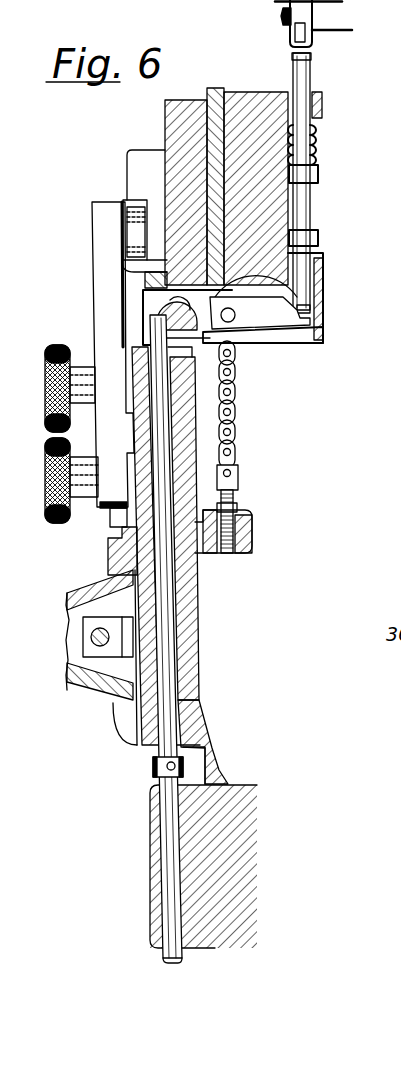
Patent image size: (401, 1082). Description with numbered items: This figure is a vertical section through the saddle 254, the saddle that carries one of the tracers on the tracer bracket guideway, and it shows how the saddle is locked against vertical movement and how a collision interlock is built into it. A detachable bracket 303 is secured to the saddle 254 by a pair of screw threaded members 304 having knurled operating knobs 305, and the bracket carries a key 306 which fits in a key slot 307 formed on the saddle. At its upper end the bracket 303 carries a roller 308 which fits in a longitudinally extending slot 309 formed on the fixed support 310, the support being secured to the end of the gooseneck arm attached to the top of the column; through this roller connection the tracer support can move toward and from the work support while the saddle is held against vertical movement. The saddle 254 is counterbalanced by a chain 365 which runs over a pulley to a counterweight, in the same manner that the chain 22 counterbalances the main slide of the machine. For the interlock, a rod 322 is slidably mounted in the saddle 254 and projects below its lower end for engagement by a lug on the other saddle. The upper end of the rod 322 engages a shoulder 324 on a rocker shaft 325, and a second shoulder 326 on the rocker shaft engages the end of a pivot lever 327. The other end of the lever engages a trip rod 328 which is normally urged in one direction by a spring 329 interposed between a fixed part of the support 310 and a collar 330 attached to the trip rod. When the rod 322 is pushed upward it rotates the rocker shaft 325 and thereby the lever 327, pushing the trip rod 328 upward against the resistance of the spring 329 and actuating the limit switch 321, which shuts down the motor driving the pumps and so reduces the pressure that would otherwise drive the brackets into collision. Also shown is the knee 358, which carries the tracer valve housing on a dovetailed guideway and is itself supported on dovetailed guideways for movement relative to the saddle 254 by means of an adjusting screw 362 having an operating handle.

The chain 22 is at (238, 395).
The saddle 254 is at (217, 760).
The detachable bracket 303 is at (98, 302).
The screw threaded members 304 is at (82, 378).
The knurled operating knobs 305 is at (46, 358).
The key 306 is at (127, 432).
The key slot 307 is at (112, 463).
The roller 308 is at (130, 207).
The longitudinally extending slot 309 is at (140, 200).
The fixed support 310 is at (253, 96).
The limit switch 321 is at (283, 15).
The rod 322 is at (165, 746).
The shoulder 324 is at (148, 312).
The rocker shaft 325 is at (156, 304).
The second shoulder 326 is at (246, 333).
The pivot lever 327 is at (305, 318).
The trip rod 328 is at (306, 208).
The spring 329 is at (318, 146).
The collar 330 is at (318, 170).
The knee 358 is at (90, 693).
The adjusting screw 362 is at (88, 638).
The chain 365 is at (238, 440).